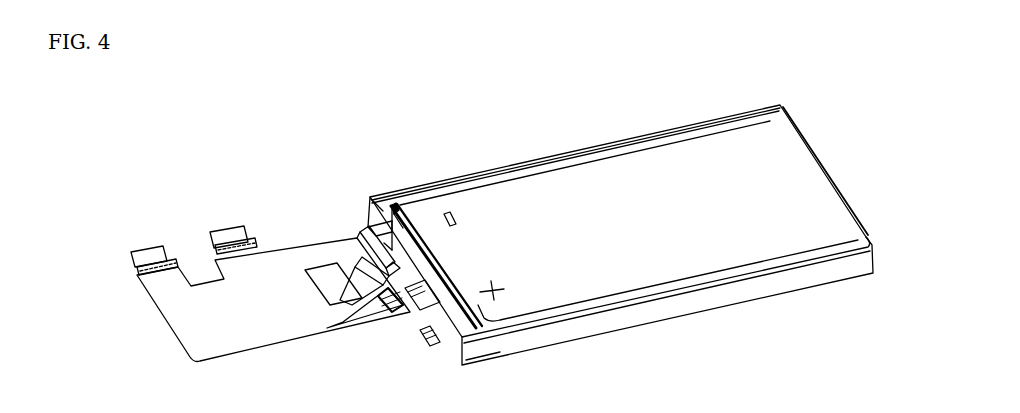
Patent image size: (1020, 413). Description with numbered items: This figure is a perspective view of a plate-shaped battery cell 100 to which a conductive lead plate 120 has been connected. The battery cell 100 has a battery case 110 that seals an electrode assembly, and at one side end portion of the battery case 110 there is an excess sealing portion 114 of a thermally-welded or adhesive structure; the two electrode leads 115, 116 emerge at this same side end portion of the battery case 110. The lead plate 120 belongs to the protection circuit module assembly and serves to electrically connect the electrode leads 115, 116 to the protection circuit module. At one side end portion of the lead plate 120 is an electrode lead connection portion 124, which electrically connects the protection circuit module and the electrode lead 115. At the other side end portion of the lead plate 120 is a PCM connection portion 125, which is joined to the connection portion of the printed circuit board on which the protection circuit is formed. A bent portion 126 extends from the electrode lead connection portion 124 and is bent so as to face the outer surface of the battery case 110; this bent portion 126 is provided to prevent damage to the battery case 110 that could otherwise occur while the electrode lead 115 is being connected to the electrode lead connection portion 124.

The battery cell 100 is at (571, 148).
The battery case 110 is at (432, 182).
The excess sealing portion 114 is at (370, 196).
The electrode lead 115 is at (352, 230).
The electrode lead 116 is at (427, 340).
The lead plate 120 is at (297, 247).
The electrode lead connection portion 124 is at (362, 262).
The PCM connection portion 125 is at (230, 230).
The bent portion 126 is at (393, 212).